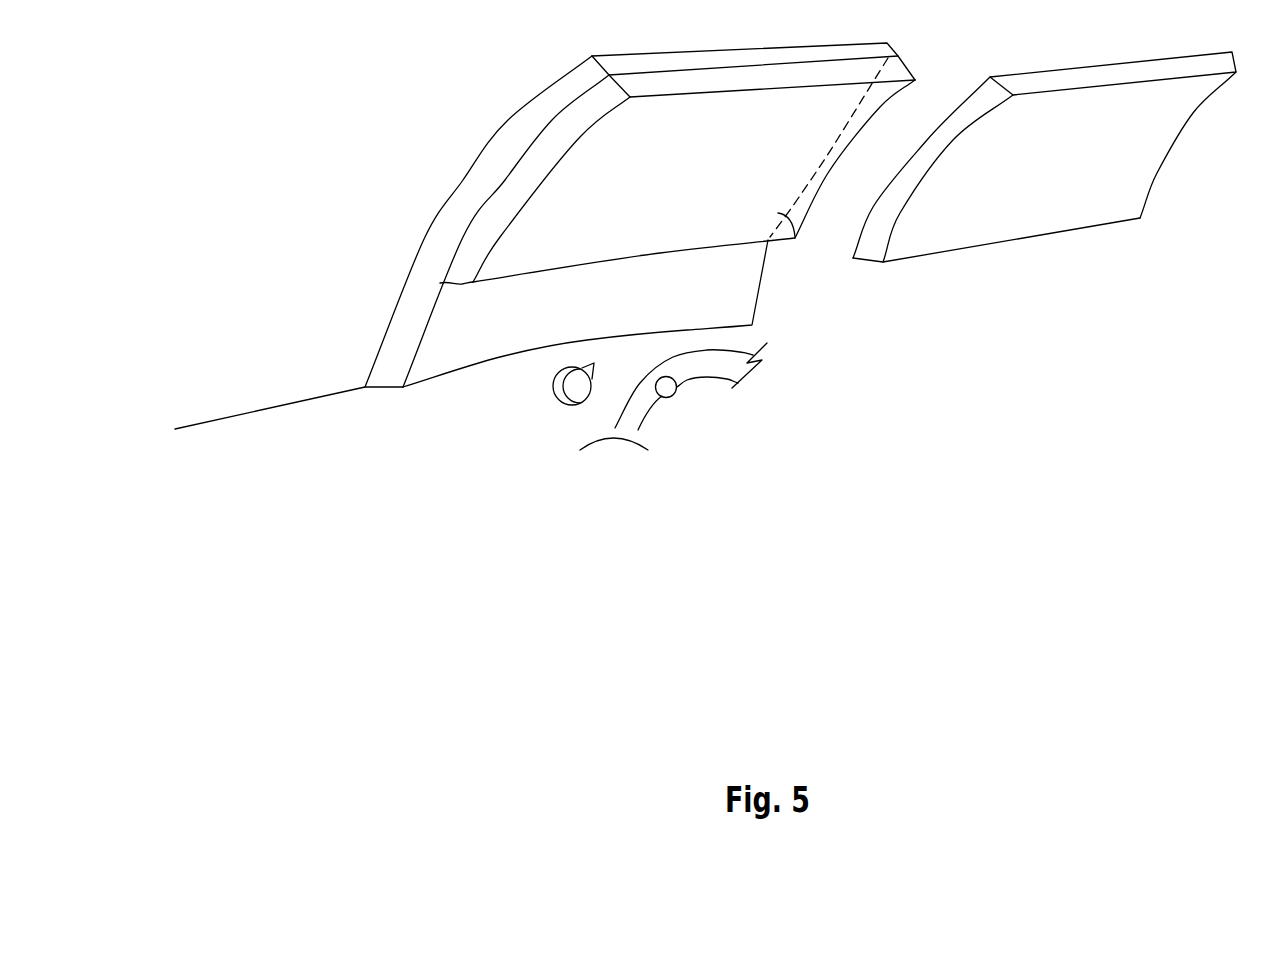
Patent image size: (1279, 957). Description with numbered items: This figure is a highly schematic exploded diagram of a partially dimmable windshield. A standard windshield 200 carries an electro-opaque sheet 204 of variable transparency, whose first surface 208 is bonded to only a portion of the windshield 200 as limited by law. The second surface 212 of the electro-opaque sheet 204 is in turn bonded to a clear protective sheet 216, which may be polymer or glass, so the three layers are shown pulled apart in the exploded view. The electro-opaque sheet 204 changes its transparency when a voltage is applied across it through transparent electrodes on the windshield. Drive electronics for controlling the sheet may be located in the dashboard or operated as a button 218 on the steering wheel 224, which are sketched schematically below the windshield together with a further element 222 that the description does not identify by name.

The windshield 200 is at (465, 342).
The electro-opaque sheet 204 is at (715, 223).
The first surface 208 is at (449, 232).
The second surface 212 is at (795, 238).
The clear protective sheet 216 is at (922, 238).
The button 218 is at (577, 407).
The emitter 222 is at (667, 397).
The steering wheel 224 is at (697, 378).